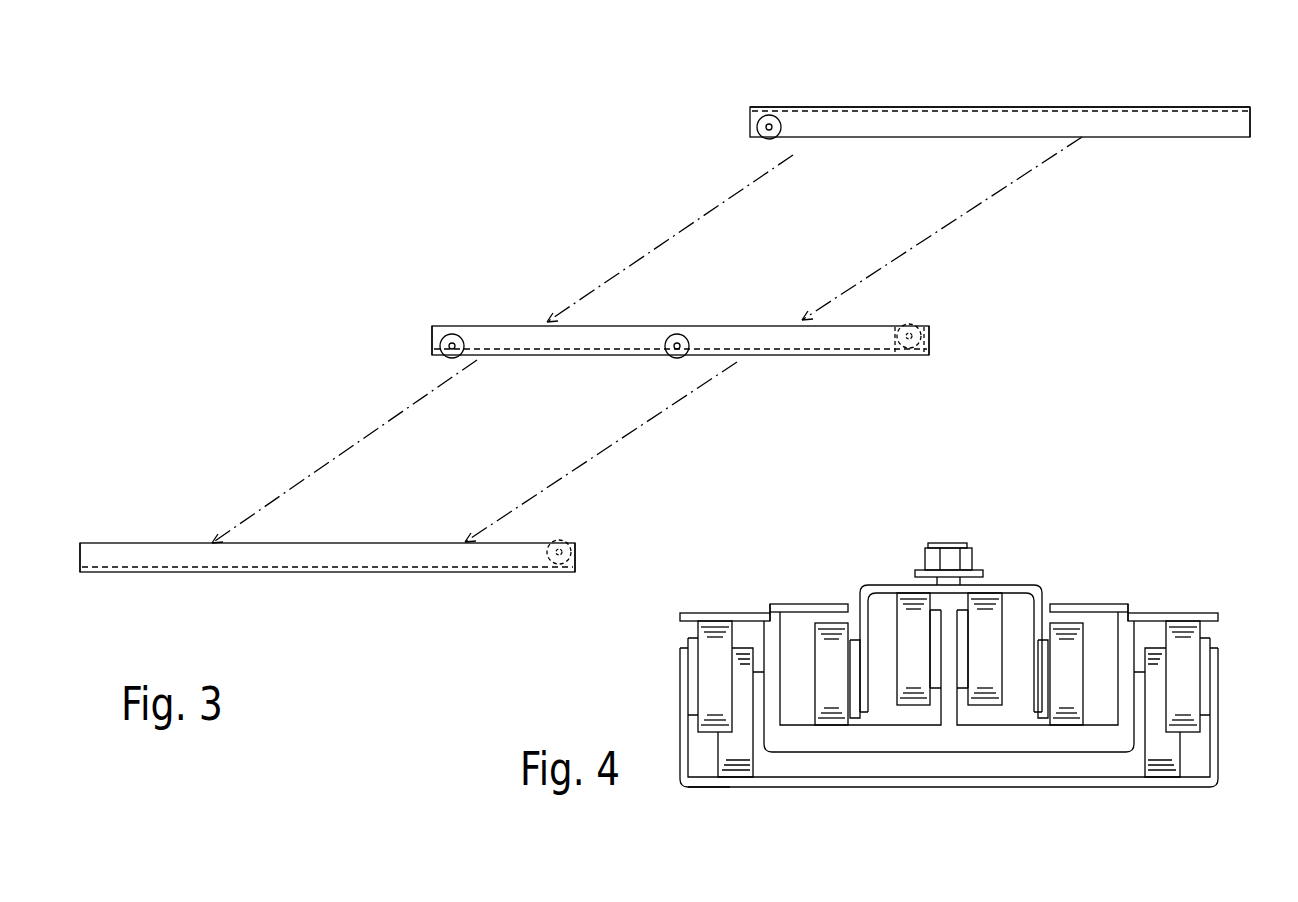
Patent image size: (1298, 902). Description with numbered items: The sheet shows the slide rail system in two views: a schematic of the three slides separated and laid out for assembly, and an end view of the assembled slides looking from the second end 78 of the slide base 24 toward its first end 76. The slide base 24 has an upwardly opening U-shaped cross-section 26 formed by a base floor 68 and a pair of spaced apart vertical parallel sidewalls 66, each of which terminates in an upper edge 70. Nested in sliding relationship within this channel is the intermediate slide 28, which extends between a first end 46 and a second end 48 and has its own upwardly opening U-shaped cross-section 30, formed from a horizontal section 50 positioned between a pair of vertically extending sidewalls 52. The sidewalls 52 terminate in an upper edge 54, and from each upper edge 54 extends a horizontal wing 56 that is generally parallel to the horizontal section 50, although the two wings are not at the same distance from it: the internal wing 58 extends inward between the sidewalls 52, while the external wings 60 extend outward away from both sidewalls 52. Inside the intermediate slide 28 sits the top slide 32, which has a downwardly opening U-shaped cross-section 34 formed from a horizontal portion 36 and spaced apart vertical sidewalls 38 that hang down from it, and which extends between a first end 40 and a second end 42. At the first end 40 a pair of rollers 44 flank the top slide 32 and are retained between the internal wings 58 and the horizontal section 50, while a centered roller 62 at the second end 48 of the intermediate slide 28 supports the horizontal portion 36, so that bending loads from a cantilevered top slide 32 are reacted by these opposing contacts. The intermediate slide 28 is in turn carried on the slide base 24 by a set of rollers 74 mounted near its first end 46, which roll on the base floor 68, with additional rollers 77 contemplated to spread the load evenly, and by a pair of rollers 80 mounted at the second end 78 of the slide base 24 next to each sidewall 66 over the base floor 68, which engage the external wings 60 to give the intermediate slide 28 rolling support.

In FIG. 3, the slide base 24 is at (168, 543).
In FIG. 4, the slide base 24 is at (873, 788).
In FIG. 4, the U-shaped cross-section 26 is at (708, 787).
In FIG. 3, the intermediate slide 28 is at (505, 326).
In FIG. 4, the intermediate slide 28 is at (1007, 752).
In FIG. 4, the U-shaped cross-section 30 is at (1077, 744).
In FIG. 3, the top slide 32 is at (1065, 107).
In FIG. 4, the top slide 32 is at (868, 585).
In FIG. 4, the downwardly opening U-shaped cross-section 34 is at (873, 688).
In FIG. 4, the horizontal portion 36 is at (965, 543).
In FIG. 4, the vertical sidewalls 38 is at (868, 627).
In FIG. 3, the first end 40 is at (805, 107).
In FIG. 3, the second end 42 is at (1218, 107).
In FIG. 3, the rollers 44 is at (765, 139).
In FIG. 4, the rollers 44 is at (820, 684).
In FIG. 3, the first end 46 is at (432, 340).
In FIG. 3, the second end 48 is at (930, 345).
In FIG. 4, the horizontal section 50 is at (983, 752).
In FIG. 4, the sidewalls 52 is at (797, 690).
In FIG. 4, the upper edge 54 is at (781, 632).
In FIG. 4, the horizontal wings 56 is at (738, 612).
In FIG. 4, the internal wing 58 is at (790, 603).
In FIG. 4, the external wings 60 is at (692, 612).
In FIG. 3, the centered roller 62 is at (907, 324).
In FIG. 4, the centered roller 62 is at (974, 646).
In FIG. 4, the vertical parallel sidewalls 66 is at (680, 720).
In FIG. 4, the base floor 68 is at (840, 771).
In FIG. 4, the upper edge 70 is at (680, 648).
In FIG. 3, the rollers 74 is at (450, 358).
In FIG. 3, the first end 76 is at (115, 572).
In FIG. 3, the additional rollers 77 is at (675, 358).
In FIG. 3, the second end 78 is at (517, 572).
In FIG. 3, the rollers 80 is at (566, 542).
In FIG. 4, the rollers 80 is at (704, 692).